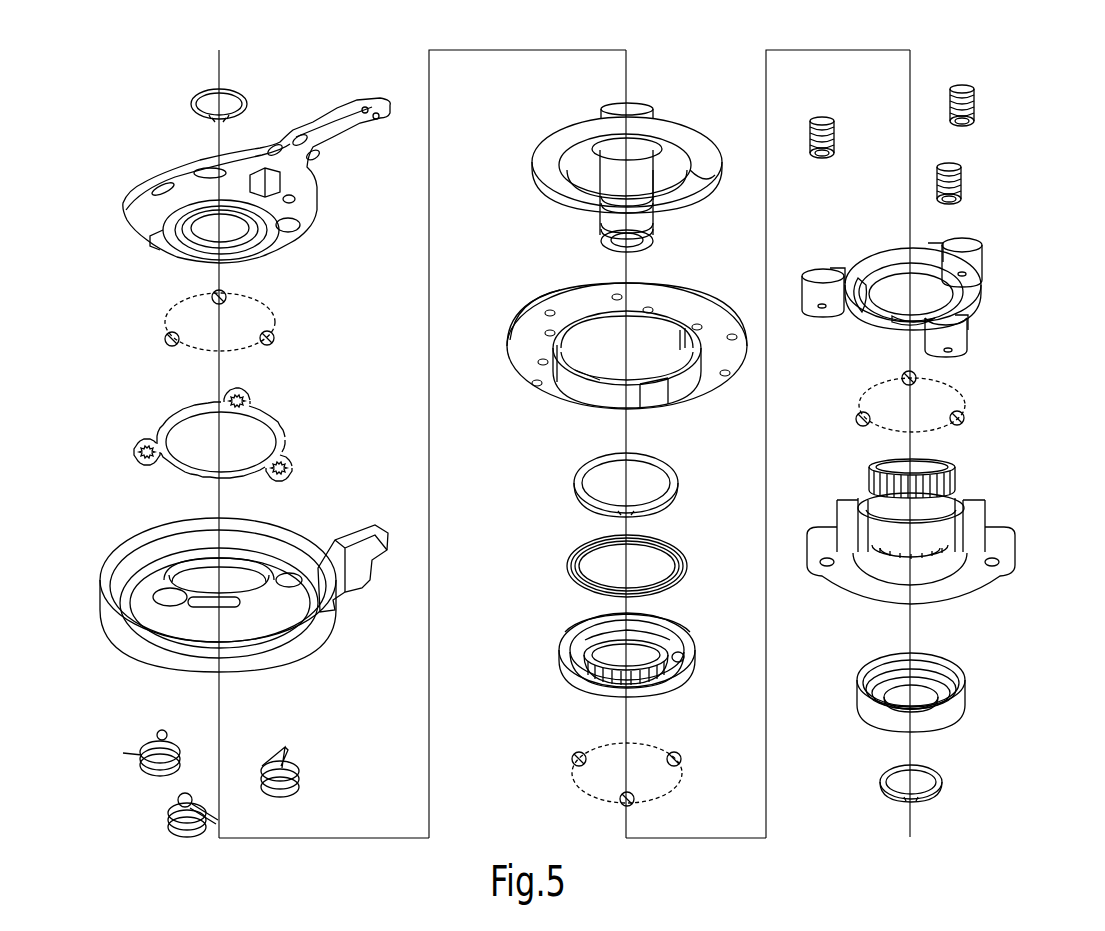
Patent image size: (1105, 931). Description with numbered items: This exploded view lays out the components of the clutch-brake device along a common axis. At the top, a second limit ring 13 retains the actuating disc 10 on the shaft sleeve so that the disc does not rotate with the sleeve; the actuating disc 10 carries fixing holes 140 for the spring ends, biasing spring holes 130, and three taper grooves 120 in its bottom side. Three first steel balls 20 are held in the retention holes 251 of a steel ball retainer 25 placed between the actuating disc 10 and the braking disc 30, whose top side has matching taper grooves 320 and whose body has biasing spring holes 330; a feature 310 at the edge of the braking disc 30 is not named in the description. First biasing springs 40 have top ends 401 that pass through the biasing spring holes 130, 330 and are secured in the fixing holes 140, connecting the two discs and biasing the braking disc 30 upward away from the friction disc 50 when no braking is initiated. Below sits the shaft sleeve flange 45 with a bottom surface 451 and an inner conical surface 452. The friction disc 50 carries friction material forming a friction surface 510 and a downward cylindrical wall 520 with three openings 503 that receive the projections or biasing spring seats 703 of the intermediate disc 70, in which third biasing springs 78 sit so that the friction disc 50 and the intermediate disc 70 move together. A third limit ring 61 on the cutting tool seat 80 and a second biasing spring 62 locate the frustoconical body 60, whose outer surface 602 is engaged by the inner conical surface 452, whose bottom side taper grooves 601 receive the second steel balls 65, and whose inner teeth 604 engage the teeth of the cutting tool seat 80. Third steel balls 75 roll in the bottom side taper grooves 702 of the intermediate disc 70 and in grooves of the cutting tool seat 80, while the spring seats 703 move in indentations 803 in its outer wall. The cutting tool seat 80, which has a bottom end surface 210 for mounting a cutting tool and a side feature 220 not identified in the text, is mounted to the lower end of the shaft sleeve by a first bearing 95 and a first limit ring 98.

The second limit ring 13 is at (195, 100).
The actuating disc 10 is at (165, 163).
The fixing holes 140 is at (160, 190).
The biasing spring holes 130 is at (294, 205).
The taper grooves 120 is at (290, 232).
The steel balls 20 is at (172, 338).
The steel ball retainer 25 is at (167, 435).
The retention holes 251 is at (291, 458).
The braking disc 30 is at (148, 528).
The tab 310 is at (337, 608).
The taper grooves 320 is at (172, 598).
The biasing spring holes 330 is at (230, 615).
The top ends 401 is at (160, 730).
The first biasing springs 40 is at (170, 813).
The shaft sleeve flange 45 is at (543, 140).
The inner conical surface 452 is at (665, 187).
The bottom surface 451 is at (702, 180).
The friction disc 50 is at (708, 375).
The friction surface 510 is at (545, 300).
The cylindrical wall 520 is at (545, 372).
The openings 503 is at (660, 398).
The third limit ring 61 is at (575, 488).
The second biasing spring 62 is at (567, 562).
The frustoconical body 60 is at (563, 647).
The outer surface 602 is at (665, 622).
The bottom side taper grooves 601 is at (675, 677).
The inner teeth 604 is at (657, 687).
The second steel balls 65 is at (577, 758).
The third biasing springs 78 is at (977, 110).
The intermediate disc 70 is at (975, 292).
The biasing spring seats 703 is at (978, 260).
The bottom side taper grooves 702 is at (972, 315).
The third steel balls 75 is at (963, 415).
The cutting tool seat 80 is at (983, 508).
The indentations 803 is at (947, 502).
The hole 220 is at (998, 560).
The bottom end surface 210 is at (1012, 560).
The first bearing 95 is at (965, 682).
The first limit ring 98 is at (942, 780).